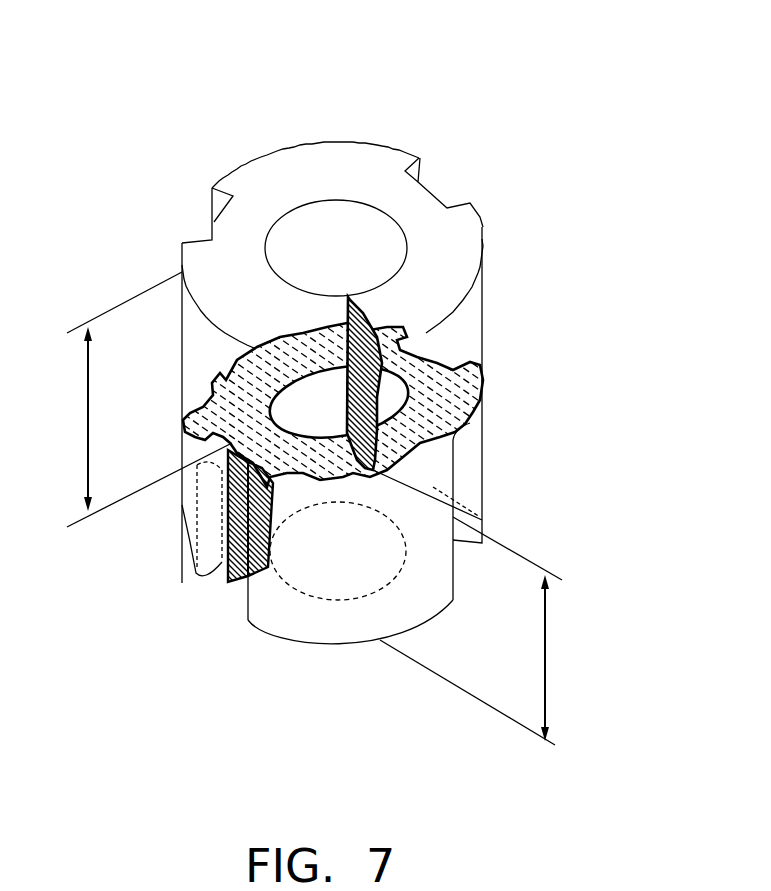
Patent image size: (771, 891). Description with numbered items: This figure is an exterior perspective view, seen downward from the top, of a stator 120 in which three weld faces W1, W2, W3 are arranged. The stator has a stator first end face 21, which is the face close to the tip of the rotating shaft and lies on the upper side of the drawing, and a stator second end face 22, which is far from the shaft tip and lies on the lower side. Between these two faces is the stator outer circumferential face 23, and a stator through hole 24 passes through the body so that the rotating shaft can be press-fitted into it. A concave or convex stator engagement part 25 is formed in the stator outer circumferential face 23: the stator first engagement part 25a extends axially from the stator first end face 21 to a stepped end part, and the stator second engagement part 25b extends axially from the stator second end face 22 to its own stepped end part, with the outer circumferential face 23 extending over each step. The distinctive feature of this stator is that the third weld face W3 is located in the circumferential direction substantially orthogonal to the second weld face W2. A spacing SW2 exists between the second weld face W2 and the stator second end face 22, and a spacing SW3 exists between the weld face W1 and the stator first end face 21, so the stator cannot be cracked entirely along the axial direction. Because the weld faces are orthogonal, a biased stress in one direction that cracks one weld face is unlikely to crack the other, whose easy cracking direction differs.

The stator 120 is at (478, 69).
The stator first end face 21 is at (468, 232).
The stator second end face 22 is at (262, 623).
The stator outer circumferential face 23 is at (183, 360).
The stator through hole 24 is at (398, 249).
The stator engagement part 25 is at (443, 195).
The stator first engagement part 25a is at (332, 200).
The stator second engagement part 25b is at (331, 499).
The first weld face W1 is at (410, 447).
The second weld face W2 is at (478, 363).
The third weld face W3 is at (187, 517).
The spacing SW3 is at (131, 399).
The spacing SW2 is at (471, 631).